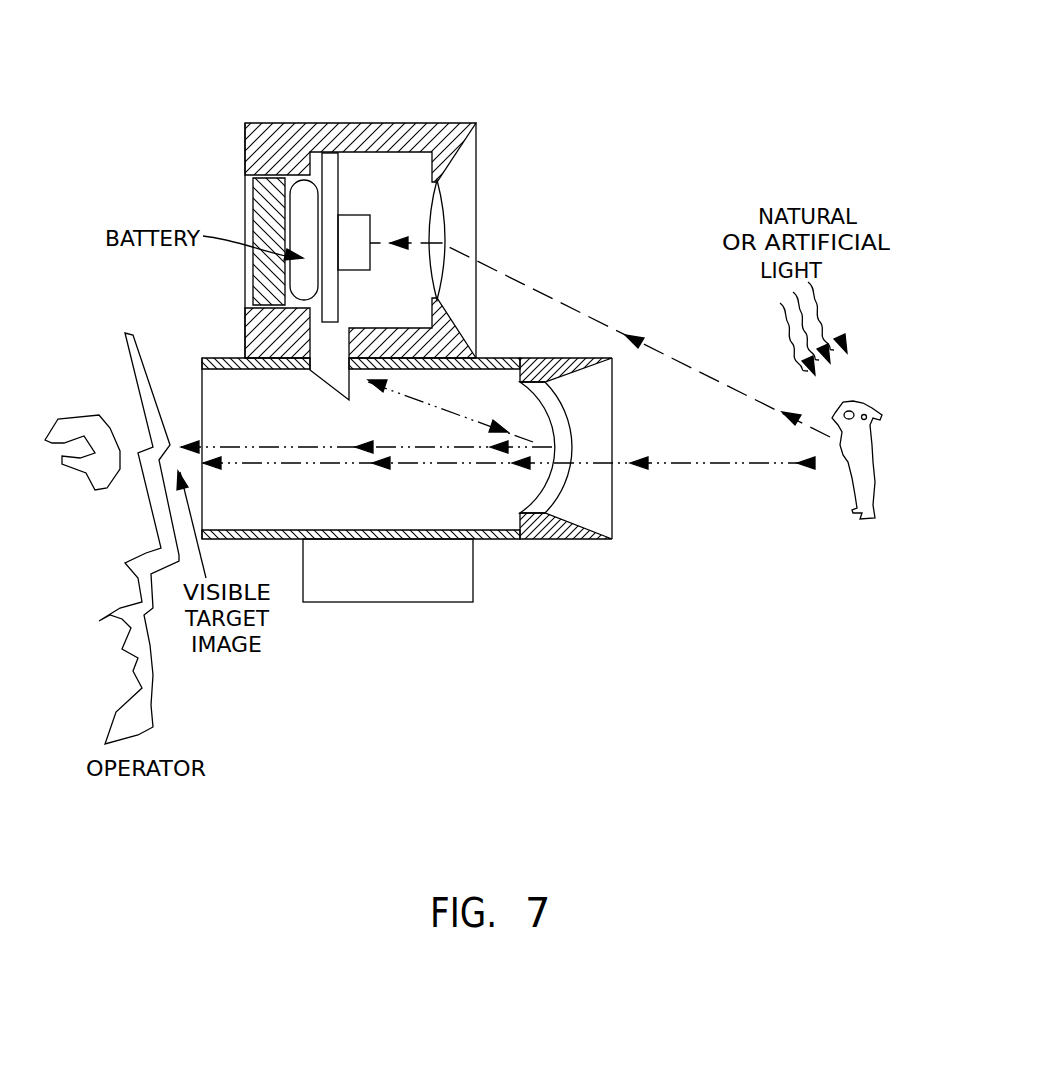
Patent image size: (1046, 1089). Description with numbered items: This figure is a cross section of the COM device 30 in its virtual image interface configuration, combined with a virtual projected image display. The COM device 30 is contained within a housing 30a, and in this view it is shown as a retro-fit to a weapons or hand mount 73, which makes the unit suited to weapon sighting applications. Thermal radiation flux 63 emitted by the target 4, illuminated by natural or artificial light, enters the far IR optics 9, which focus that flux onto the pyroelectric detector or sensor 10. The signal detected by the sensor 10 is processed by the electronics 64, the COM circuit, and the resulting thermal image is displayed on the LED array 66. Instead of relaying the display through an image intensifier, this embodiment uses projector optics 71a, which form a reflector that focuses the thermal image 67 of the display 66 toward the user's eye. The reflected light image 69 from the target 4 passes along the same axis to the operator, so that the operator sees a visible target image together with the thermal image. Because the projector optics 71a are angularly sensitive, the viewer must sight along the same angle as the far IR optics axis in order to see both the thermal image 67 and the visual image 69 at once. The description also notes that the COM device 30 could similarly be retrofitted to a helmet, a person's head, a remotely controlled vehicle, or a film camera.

The COM device 30 is at (528, 116).
The housing 30a is at (452, 122).
The electronics 64 is at (333, 190).
The pyroelectric detector or sensor 10 is at (348, 233).
The far IR optics 9 is at (440, 214).
The thermal radiation flux 63 is at (638, 330).
The LED array 66 is at (326, 374).
The projected image 67 is at (462, 412).
The reflected light image 69 is at (662, 475).
The projector optics 71a is at (566, 492).
The weapons or hand mount 73 is at (432, 586).
The target 4 is at (835, 490).